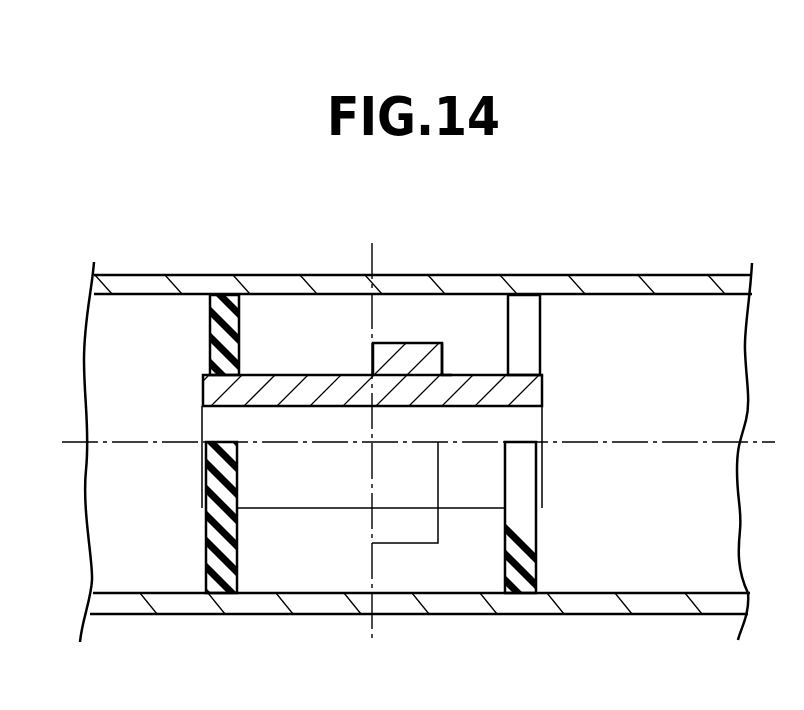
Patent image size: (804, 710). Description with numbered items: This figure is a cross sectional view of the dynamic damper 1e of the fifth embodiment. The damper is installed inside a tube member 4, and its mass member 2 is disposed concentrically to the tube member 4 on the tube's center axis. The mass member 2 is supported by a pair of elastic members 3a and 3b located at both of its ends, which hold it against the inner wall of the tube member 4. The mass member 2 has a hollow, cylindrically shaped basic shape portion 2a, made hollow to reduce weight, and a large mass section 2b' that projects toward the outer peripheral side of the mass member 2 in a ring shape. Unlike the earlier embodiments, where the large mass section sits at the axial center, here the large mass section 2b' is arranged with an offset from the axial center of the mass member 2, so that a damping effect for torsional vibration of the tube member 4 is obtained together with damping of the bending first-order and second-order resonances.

The tube member 4 is at (612, 287).
The basic shape portion 2a is at (227, 390).
The dynamic damper 1e is at (412, 335).
The large mass section 2b' is at (473, 299).
The elastic member 3a is at (238, 333).
The elastic member 3b is at (540, 337).
The mass member 2 is at (555, 477).